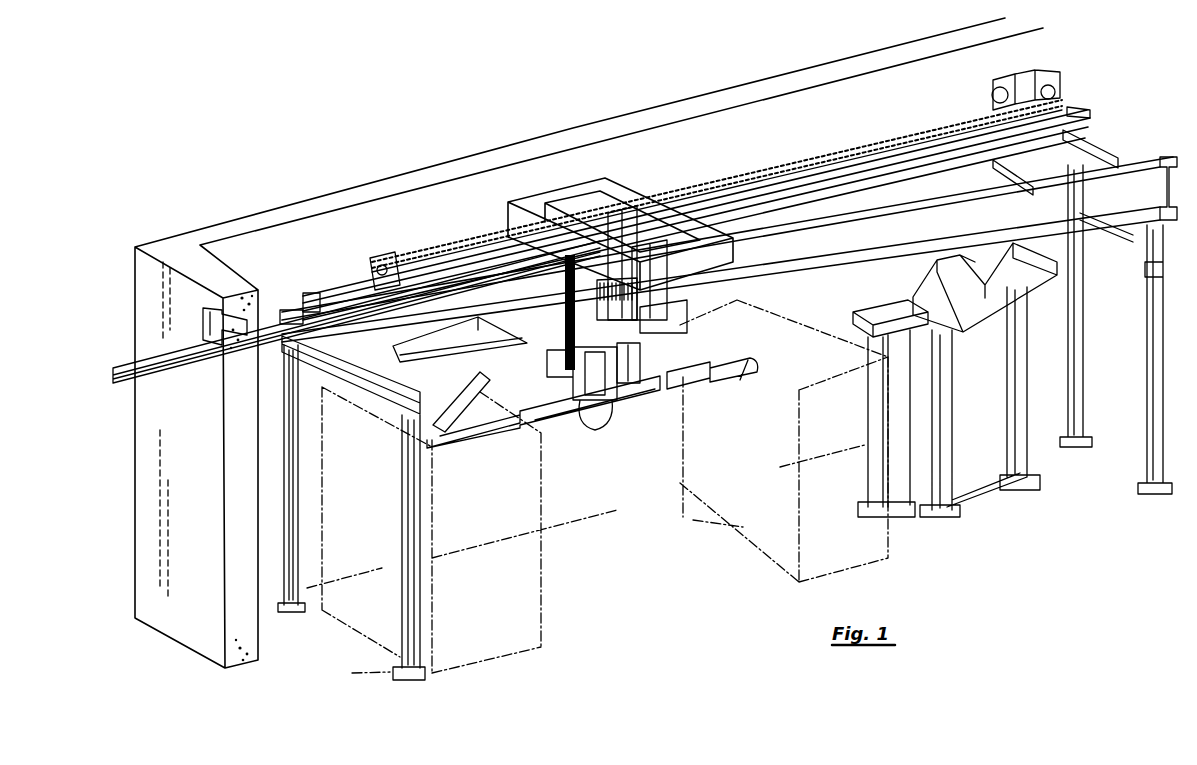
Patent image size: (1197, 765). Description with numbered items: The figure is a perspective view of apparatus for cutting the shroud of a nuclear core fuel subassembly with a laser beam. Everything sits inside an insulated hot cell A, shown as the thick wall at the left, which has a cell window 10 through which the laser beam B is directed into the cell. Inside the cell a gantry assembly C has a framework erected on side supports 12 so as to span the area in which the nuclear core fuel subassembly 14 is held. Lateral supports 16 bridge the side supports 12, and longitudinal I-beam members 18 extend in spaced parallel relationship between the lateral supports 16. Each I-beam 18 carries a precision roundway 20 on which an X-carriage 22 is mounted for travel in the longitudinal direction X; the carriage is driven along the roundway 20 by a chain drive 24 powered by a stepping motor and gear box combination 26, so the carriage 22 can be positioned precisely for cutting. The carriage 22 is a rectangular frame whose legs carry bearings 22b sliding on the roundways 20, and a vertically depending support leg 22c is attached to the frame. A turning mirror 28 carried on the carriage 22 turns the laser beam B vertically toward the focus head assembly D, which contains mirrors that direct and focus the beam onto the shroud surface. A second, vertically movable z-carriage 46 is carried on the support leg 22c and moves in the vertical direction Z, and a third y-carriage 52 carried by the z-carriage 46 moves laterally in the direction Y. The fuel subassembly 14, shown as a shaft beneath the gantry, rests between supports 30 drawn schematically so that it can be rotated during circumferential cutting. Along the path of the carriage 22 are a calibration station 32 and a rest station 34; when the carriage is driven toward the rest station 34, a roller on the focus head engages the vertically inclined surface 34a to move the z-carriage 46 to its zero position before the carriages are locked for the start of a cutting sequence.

The insulated hot cell A is at (348, 183).
The laser beam B is at (157, 358).
The gantry assembly C is at (360, 287).
The focus head assembly D is at (553, 340).
The longitudinal (x) direction X is at (590, 167).
The lateral (y) direction Y is at (560, 388).
The vertical (z) direction Z is at (662, 327).
The cell window 10 is at (222, 362).
The side supports 12 is at (413, 502).
The nuclear core fuel subassembly 14 is at (557, 420).
The lateral supports 16 is at (360, 383).
The longitudinal I-beam members 18 is at (355, 290).
The precision roundway 20 is at (478, 325).
The x-carriage 22 is at (633, 177).
The bearings 22b is at (745, 262).
The vertically depending support leg 22c is at (682, 320).
The chain drive 24 is at (903, 120).
The stepping motor and gear box combination 26 is at (1022, 80).
The turning mirror 28 is at (600, 230).
The supports 30 is at (512, 590).
The calibration station 32 is at (900, 513).
The rest station 34 is at (1030, 460).
The vertically inclined surface 34a is at (937, 282).
The z-carriage 46 is at (633, 387).
The y-carriage 52 is at (582, 380).